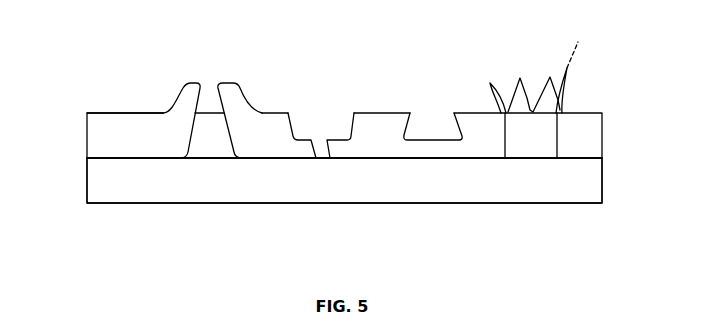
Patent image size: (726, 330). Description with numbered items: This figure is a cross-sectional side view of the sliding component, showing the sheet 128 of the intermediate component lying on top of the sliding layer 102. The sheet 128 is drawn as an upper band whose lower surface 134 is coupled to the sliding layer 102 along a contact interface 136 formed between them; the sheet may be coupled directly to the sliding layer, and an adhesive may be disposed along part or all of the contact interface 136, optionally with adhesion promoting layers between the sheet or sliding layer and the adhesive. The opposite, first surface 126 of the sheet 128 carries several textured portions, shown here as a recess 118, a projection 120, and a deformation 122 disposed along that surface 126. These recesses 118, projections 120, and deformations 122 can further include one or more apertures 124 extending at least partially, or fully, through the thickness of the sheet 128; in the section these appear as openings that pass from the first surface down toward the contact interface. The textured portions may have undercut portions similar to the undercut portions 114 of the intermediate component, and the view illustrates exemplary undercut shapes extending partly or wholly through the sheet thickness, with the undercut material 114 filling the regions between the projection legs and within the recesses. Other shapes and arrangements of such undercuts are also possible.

The sliding layer 102 is at (127, 192).
The undercut portions 114 is at (313, 153).
The recess 118 is at (338, 122).
The projection 120 is at (240, 87).
The deformation 122 is at (527, 77).
The apertures 124 is at (208, 97).
The surface 126 is at (101, 113).
The sheet 128 is at (604, 131).
The surface 134 is at (102, 158).
The contact interface 136 is at (600, 154).